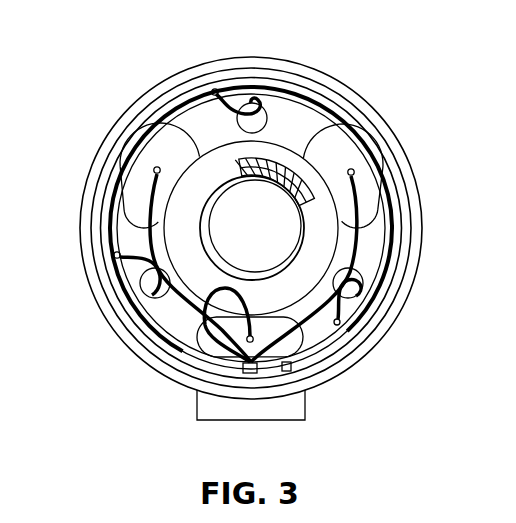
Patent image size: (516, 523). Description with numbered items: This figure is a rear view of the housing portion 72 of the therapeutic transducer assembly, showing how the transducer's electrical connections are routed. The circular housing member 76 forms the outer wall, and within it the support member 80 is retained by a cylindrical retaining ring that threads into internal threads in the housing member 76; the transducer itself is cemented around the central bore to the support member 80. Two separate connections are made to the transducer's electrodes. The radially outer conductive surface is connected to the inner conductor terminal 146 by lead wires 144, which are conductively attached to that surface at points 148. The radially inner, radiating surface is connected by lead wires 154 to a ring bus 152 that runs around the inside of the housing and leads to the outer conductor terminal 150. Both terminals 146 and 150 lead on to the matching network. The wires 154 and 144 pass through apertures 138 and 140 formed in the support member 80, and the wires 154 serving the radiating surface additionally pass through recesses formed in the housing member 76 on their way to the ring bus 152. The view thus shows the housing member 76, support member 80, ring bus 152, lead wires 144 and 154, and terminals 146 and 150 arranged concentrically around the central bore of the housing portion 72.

The housing portion 72 is at (382, 459).
The housing member 76 is at (398, 320).
The support member 80 is at (373, 241).
The aperture 138 is at (320, 132).
The aperture 140 is at (266, 109).
The lead wires 144 is at (218, 303).
The inner conductor terminal 146 is at (243, 371).
The points 148 is at (355, 172).
The outer conductor terminal 150 is at (291, 370).
The ring bus 152 is at (212, 89).
The lead wires 154 is at (114, 258).